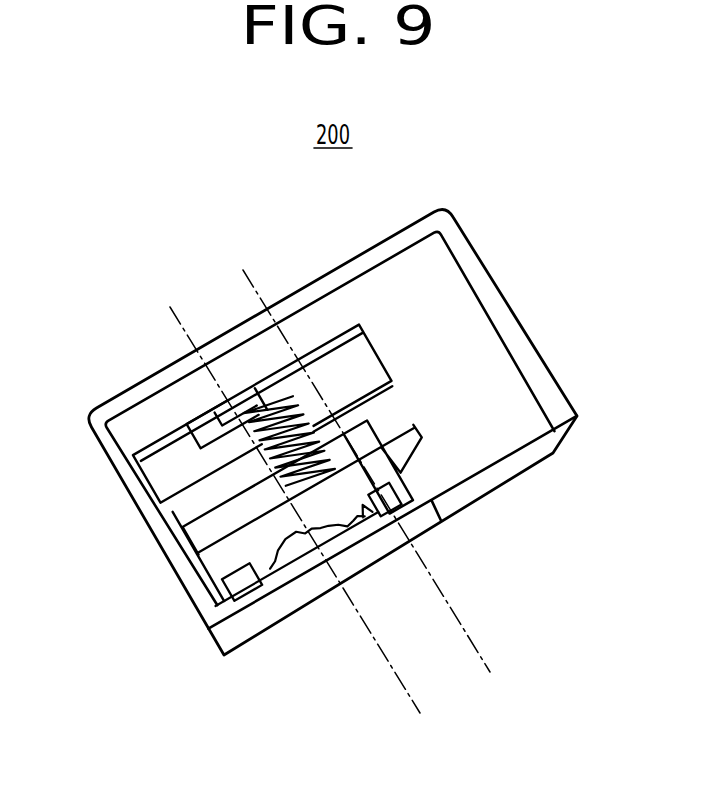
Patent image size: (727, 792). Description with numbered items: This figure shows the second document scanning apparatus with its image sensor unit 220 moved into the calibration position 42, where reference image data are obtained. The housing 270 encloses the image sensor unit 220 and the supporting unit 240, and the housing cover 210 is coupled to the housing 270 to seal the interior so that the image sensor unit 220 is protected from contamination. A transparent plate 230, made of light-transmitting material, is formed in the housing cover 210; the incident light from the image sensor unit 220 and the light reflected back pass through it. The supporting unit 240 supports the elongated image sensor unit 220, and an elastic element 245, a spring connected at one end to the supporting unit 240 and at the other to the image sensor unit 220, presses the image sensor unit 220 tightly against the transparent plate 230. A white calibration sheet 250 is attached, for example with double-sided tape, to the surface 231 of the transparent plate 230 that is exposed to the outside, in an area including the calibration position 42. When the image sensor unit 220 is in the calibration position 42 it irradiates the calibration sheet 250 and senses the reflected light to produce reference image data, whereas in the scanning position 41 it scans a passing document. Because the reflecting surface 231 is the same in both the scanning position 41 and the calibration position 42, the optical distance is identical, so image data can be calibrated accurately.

The housing cover 210 is at (222, 636).
The image sensor unit 220 is at (394, 416).
The transparent plate 230 is at (296, 591).
The surface 231 is at (396, 541).
The supporting unit 240 is at (334, 332).
The elastic element 245 is at (287, 396).
The calibration sheet 250 is at (324, 595).
The housing 270 is at (112, 451).
The scanning position 41 is at (243, 269).
The calibration position 42 is at (170, 306).